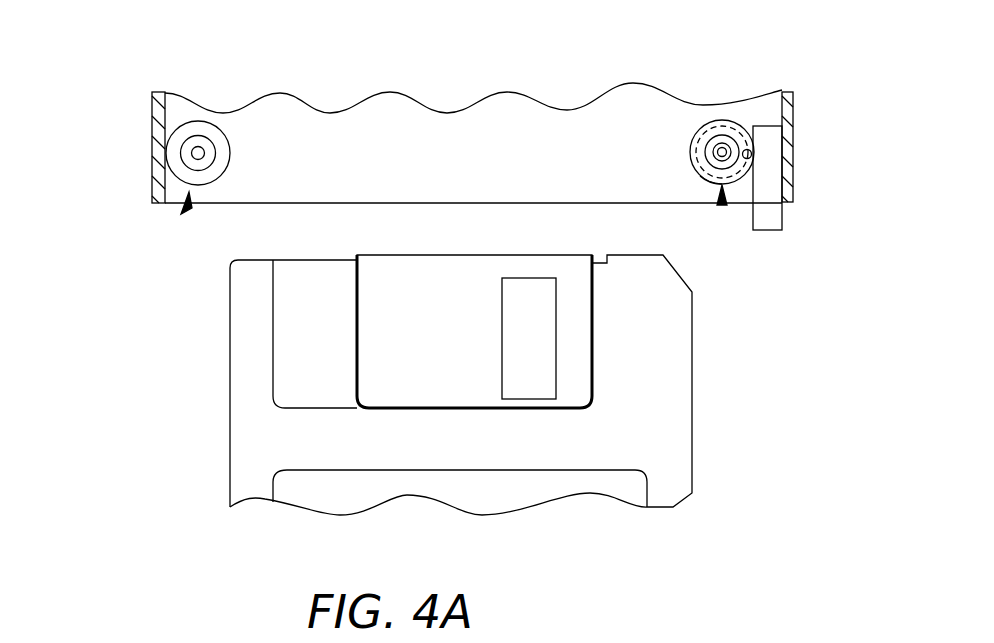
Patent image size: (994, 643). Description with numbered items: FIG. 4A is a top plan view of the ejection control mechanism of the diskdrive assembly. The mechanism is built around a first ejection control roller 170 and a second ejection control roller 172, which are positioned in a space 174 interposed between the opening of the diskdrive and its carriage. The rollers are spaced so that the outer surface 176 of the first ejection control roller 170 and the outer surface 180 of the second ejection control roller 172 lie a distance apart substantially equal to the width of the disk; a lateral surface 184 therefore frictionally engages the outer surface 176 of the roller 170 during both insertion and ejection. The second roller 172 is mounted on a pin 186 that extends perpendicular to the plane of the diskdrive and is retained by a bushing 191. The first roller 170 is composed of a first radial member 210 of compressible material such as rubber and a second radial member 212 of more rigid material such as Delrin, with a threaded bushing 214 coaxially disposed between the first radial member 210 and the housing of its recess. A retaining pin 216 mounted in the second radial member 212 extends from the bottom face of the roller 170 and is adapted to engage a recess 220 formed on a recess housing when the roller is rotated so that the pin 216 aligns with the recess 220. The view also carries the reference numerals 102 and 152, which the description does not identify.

The housing 102 is at (692, 331).
The end wall 152 is at (770, 210).
The first ejection control roller 170 is at (722, 205).
The second ejection control roller 172 is at (186, 208).
The space 174 is at (450, 161).
The outer surface of the first ejection control roller 176 is at (693, 133).
The outer surface of the second ejection control roller 180 is at (203, 130).
The lateral surface 184 is at (240, 420).
The pin 186 is at (198, 148).
The bushing 191 is at (185, 152).
The first radial member 210 is at (713, 140).
The second radial member 212 is at (711, 187).
The threaded bushing 214 is at (728, 155).
The retaining pin 216 is at (748, 148).
The recess 220 is at (697, 153).